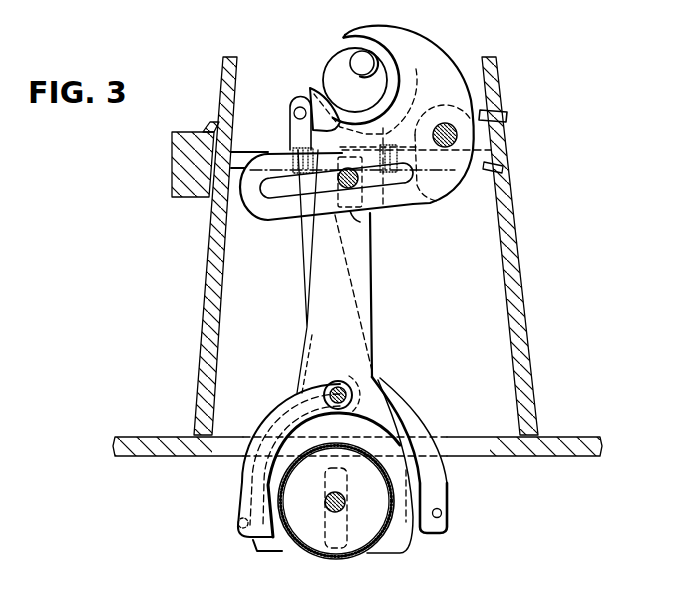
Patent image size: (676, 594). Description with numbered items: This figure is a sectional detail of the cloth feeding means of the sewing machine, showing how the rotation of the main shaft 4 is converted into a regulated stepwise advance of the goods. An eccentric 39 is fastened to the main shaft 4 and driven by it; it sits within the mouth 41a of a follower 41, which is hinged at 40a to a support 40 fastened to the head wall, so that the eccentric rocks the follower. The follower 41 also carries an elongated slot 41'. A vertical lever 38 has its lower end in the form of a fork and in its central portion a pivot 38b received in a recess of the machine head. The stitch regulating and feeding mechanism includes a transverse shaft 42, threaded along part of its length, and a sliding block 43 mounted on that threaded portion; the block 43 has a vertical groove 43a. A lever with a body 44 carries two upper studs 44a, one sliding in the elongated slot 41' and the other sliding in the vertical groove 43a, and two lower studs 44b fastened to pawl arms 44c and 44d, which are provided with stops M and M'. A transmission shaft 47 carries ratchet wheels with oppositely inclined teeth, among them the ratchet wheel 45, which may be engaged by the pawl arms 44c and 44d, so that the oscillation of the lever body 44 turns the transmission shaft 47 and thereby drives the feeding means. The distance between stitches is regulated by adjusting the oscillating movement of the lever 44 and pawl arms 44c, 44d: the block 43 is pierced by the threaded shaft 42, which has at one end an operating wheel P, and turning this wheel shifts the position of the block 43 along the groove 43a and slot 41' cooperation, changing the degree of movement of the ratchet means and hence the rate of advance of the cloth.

The operating wheel P is at (185, 150).
The main shaft 4 is at (360, 60).
The eccentric 39 is at (340, 72).
The support 40 is at (477, 135).
The hinge 40a is at (500, 108).
The follower 41 is at (409, 115).
The mouth 41a is at (386, 34).
The elongated slot 41' is at (395, 191).
The transverse shaft 42 is at (265, 130).
The sliding block 43 is at (310, 88).
The vertical groove 43a is at (392, 130).
The vertical lever 38 is at (305, 242).
The pivot 38b is at (330, 338).
The lever body 44 is at (375, 256).
The upper studs 44a is at (357, 218).
The lower studs 44b is at (330, 392).
The pawl arm 44c is at (238, 490).
The pawl arm 44d is at (444, 490).
The ratchet wheel 45 is at (367, 523).
The transmission shaft 47 is at (328, 506).
The stop M is at (226, 538).
The stop M' is at (455, 528).